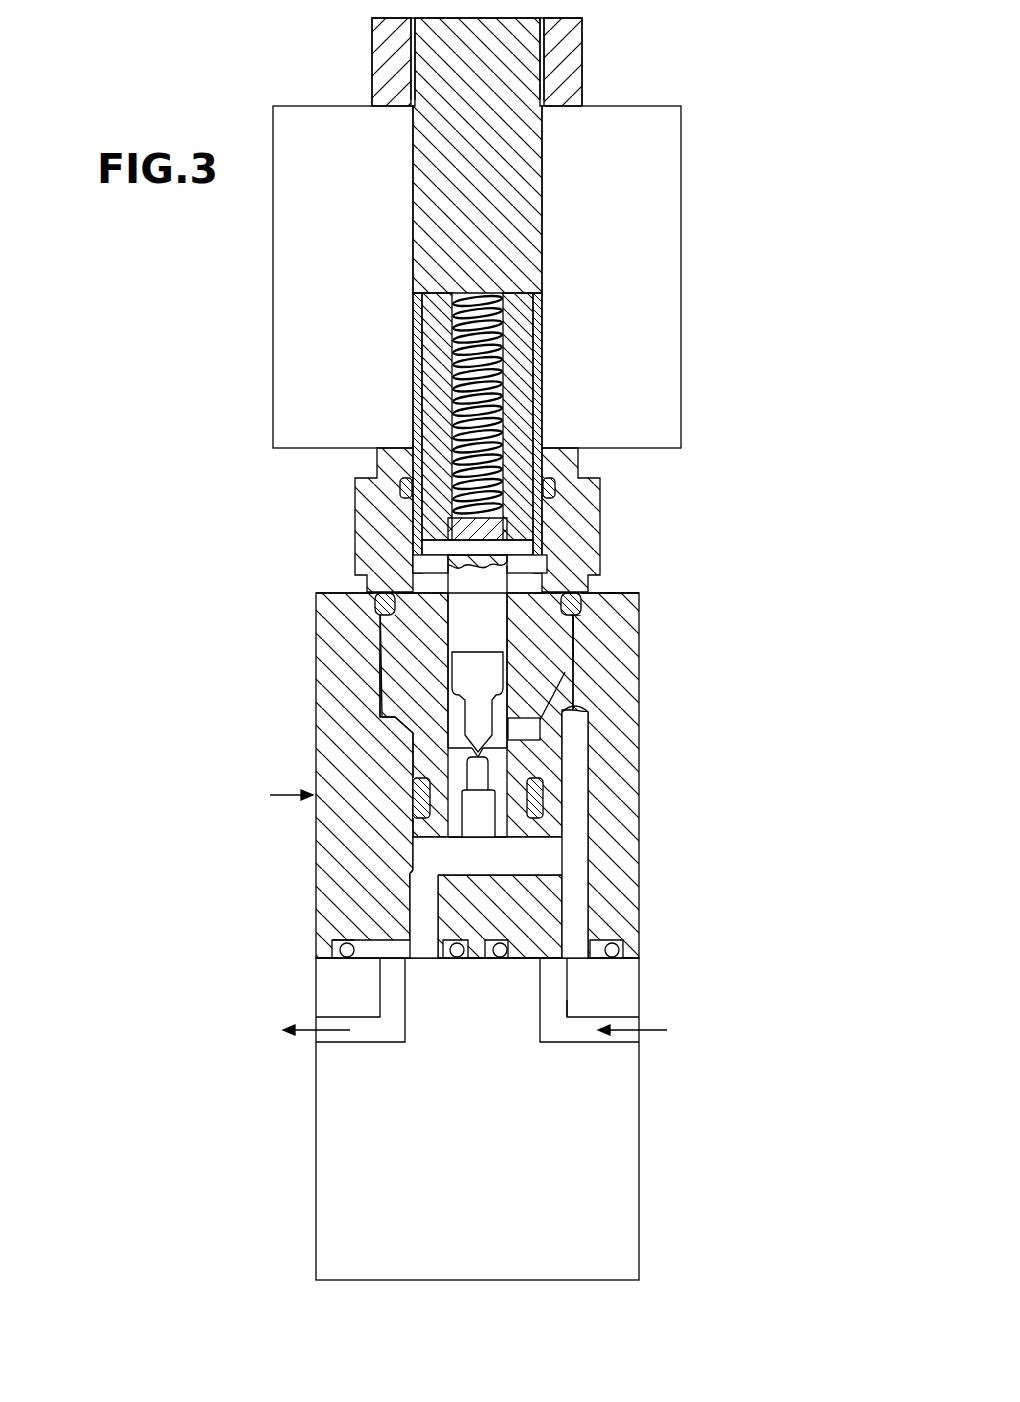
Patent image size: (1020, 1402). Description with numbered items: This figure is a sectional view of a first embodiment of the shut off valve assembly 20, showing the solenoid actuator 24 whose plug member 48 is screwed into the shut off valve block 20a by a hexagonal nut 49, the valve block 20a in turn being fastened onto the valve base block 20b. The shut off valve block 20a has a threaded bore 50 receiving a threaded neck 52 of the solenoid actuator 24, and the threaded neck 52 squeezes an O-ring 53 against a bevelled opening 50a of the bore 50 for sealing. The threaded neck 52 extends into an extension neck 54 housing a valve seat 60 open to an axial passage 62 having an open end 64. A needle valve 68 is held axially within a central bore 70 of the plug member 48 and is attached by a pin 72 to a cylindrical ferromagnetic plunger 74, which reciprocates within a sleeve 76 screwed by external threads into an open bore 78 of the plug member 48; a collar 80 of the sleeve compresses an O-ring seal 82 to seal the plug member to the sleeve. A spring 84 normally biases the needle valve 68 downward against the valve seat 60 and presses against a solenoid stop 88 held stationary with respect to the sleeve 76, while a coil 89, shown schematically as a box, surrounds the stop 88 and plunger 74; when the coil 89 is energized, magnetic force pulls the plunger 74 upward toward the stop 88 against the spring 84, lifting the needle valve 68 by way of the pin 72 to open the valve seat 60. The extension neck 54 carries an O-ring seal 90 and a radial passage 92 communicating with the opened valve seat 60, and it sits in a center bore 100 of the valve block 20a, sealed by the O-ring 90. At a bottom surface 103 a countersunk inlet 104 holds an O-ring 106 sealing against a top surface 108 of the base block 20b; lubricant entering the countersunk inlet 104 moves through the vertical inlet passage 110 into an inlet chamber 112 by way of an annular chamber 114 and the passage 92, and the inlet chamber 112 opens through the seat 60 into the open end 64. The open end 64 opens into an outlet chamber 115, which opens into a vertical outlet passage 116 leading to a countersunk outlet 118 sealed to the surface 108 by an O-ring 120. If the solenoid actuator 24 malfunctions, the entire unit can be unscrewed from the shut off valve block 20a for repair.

The coil 89 is at (681, 160).
The solenoid stop 88 is at (482, 175).
The solenoid actuator 24 is at (652, 92).
The cylindrical ferromagnetic plunger 74 is at (520, 370).
The sleeve 76 is at (413, 424).
The collar 80 is at (540, 466).
The spring 84 is at (492, 432).
The pin 72 is at (556, 500).
The needle valve 68 is at (518, 548).
The hexagonal nut 49 is at (368, 510).
The open bore 78 is at (400, 485).
The O-ring seal 82 is at (556, 486).
The central bore 70 is at (450, 572).
The shut off valve block 20a is at (308, 795).
The plug member 48 is at (408, 657).
The bevelled opening 50a is at (380, 603).
The outlet chamber 115 is at (486, 857).
The vertical outlet passage 116 is at (417, 893).
The inlet passage 110 is at (572, 882).
The inlet chamber 112 is at (498, 722).
The valve seat 60 is at (477, 752).
The extension neck 54 is at (532, 758).
The axial passage 62 is at (480, 820).
The threaded neck 52 is at (545, 700).
The radial passage 92 is at (525, 730).
The O-ring seal 90 is at (543, 795).
The center bore 100 is at (428, 822).
The annular chamber 114 is at (390, 698).
The open end 64 is at (470, 845).
The countersunk outlet 118 is at (380, 950).
The O-ring 53 is at (640, 592).
The threaded bore 50 is at (575, 653).
The O-ring 120 is at (340, 950).
The top surface 108 is at (420, 945).
The O-ring 106 is at (492, 950).
The bottom surface 103 is at (626, 962).
The valve base block 20b is at (355, 1128).
The countersunk inlet 104 is at (580, 947).
The shut off valve assembly 20 is at (657, 900).